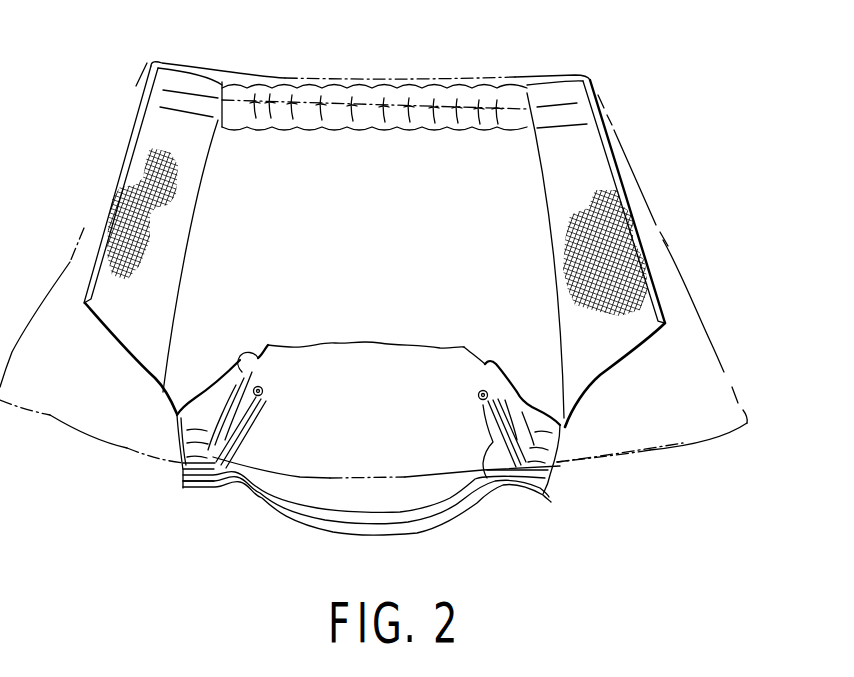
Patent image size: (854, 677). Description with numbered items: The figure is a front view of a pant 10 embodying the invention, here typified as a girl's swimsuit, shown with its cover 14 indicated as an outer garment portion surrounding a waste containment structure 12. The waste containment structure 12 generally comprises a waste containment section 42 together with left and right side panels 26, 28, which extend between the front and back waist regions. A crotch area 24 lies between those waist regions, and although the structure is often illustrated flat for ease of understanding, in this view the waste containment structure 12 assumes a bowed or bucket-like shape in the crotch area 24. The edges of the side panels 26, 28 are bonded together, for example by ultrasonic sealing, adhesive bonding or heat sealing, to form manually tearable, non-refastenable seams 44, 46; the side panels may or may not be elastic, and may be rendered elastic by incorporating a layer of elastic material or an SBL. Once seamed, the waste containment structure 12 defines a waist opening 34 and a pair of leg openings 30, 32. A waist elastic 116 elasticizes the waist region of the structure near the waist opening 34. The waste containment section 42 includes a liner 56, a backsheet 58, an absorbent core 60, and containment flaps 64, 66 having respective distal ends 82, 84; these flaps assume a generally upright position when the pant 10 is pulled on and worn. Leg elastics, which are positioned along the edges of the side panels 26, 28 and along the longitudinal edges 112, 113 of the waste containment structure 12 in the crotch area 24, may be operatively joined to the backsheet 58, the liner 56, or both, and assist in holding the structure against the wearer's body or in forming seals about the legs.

The pant 10 is at (384, 303).
The waste containment structure 12 is at (546, 374).
The cover 14 is at (705, 341).
The crotch area 24 is at (574, 454).
The left side panel 26 is at (158, 128).
The right side panel 28 is at (596, 168).
The leg opening 30 is at (104, 339).
The leg opening 32 is at (643, 370).
The waist opening 34 is at (464, 80).
The waste containment section 42 is at (374, 361).
The seam 44 is at (113, 210).
The seam 46 is at (640, 230).
The liner 56 is at (273, 490).
The backsheet 58 is at (435, 528).
The absorbent core 60 is at (353, 523).
The containment flap 64 is at (255, 408).
The containment flap 66 is at (494, 425).
The distal end 82 is at (267, 357).
The distal end 84 is at (464, 347).
The longitudinal edge 112 is at (180, 418).
The longitudinal edge 113 is at (553, 490).
The waist elastic 116 is at (362, 94).